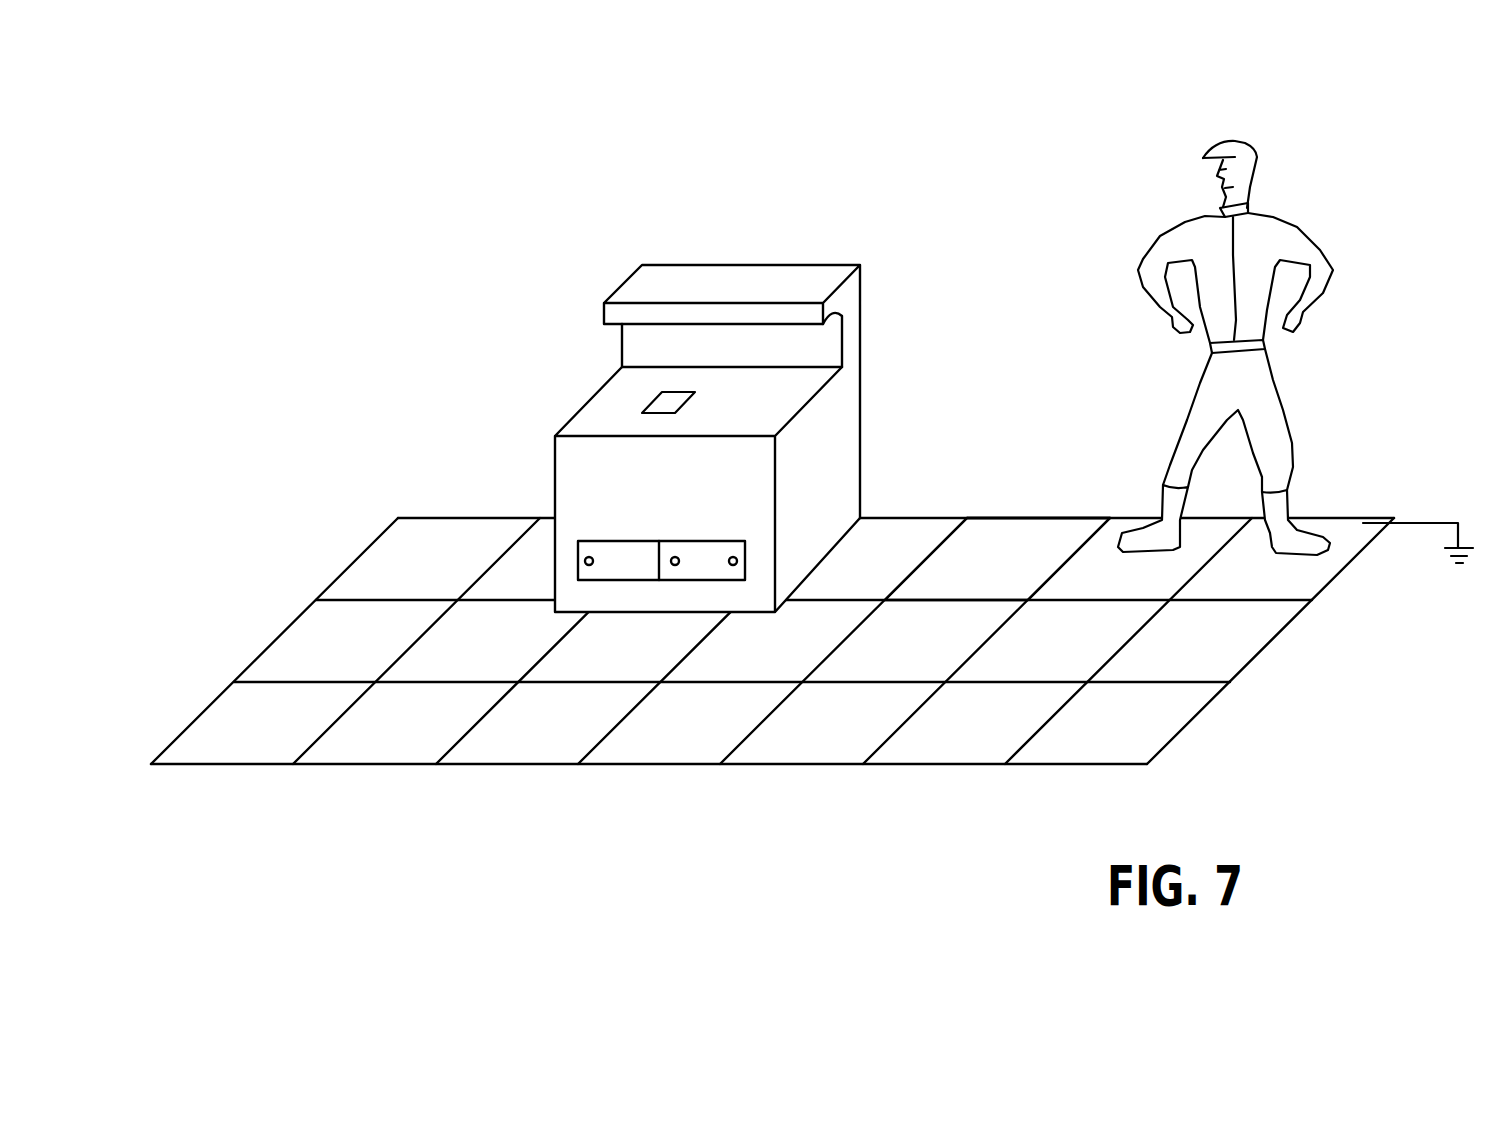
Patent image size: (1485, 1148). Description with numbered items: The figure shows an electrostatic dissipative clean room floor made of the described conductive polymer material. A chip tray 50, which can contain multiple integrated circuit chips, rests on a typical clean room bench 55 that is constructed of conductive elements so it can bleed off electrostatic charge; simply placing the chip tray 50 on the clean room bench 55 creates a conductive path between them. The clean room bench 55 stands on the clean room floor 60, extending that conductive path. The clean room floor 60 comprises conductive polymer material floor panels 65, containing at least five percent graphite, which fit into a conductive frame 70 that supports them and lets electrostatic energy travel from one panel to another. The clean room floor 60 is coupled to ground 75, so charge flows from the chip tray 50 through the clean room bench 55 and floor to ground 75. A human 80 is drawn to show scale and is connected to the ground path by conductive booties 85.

The chip tray 50 is at (672, 393).
The clean room bench 55 is at (707, 419).
The clean room floor 60 is at (400, 510).
The conductive polymer material floor panels 65 is at (1007, 537).
The conductive frame 70 is at (1082, 517).
The ground 75 is at (1418, 523).
The human 80 is at (1200, 337).
The conductive booties 85 is at (1137, 533).